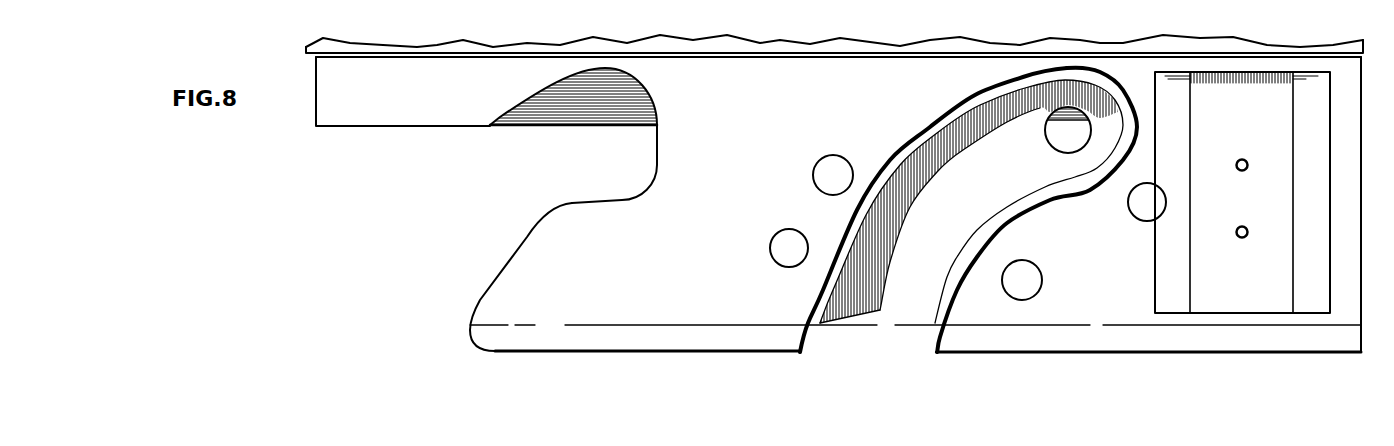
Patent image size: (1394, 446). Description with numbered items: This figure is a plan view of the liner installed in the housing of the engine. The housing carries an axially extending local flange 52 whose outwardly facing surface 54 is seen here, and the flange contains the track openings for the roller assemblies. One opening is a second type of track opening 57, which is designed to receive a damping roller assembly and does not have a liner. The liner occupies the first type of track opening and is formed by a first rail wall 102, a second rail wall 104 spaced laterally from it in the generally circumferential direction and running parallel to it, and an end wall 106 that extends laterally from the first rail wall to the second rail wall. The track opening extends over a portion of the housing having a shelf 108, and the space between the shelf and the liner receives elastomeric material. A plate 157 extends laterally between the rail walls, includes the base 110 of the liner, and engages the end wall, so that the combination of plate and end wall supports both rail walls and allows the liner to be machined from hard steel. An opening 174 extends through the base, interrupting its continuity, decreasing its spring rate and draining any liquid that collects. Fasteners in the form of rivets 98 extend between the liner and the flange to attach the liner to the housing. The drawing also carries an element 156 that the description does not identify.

The flange 52 is at (316, 110).
The second type of track opening 57 is at (575, 164).
The outwardly facing surface 54 is at (615, 287).
The shelf 108 is at (627, 107).
The rivets 98 is at (832, 186).
The first rail wall 102 is at (952, 147).
The opening 174 is at (1063, 143).
The channel 156 is at (977, 228).
The second rail wall 104 is at (1020, 208).
The end wall 106 is at (1118, 104).
The base 110 is at (890, 313).
The plate 157 is at (892, 328).